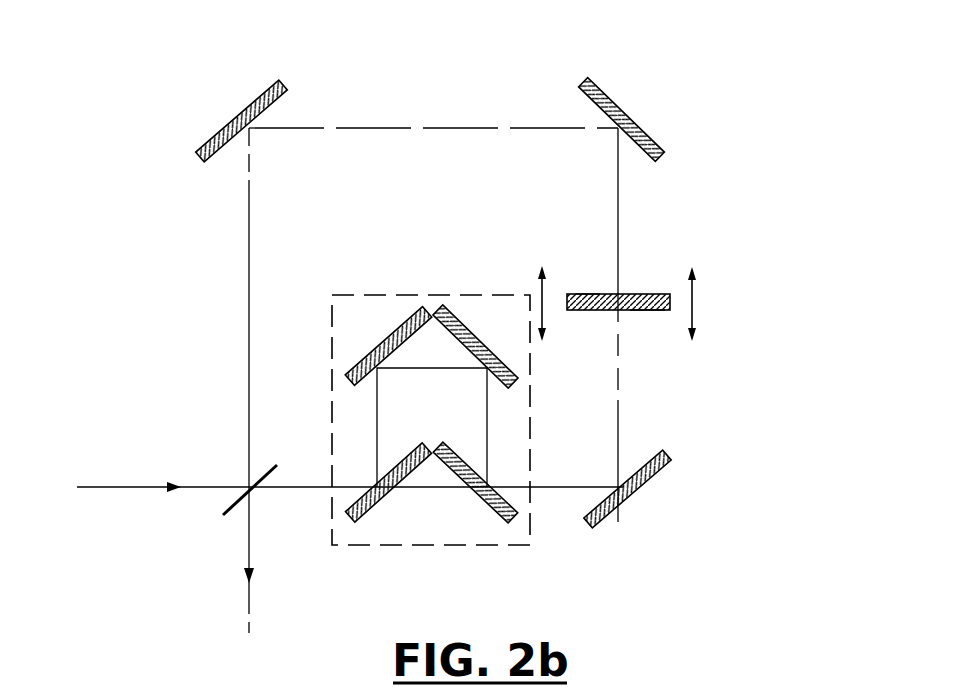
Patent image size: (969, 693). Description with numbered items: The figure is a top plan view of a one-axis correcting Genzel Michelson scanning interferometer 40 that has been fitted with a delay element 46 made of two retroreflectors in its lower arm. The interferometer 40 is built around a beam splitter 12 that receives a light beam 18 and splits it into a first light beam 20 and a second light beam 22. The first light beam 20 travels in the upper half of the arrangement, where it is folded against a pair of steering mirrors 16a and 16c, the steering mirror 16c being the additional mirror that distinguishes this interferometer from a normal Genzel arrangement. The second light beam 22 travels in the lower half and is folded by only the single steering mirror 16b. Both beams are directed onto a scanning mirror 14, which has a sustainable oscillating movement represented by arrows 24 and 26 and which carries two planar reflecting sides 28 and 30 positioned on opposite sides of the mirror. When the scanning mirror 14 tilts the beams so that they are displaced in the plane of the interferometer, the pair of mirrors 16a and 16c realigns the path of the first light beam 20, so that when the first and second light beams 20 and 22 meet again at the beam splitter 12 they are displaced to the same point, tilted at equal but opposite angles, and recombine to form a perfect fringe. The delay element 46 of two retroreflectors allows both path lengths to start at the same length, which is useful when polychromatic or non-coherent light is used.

The beam splitter 12 is at (224, 514).
The scanning mirror 14 is at (633, 293).
The steering mirror 16a is at (232, 122).
The steering mirror 16b is at (648, 487).
The additional steering mirror 16c is at (636, 116).
The light beam 18 is at (98, 496).
The first light beam 20 is at (248, 403).
The second light beam 22 is at (292, 492).
The arrow 24 is at (697, 304).
The arrow 26 is at (540, 290).
The reflecting side 28 is at (590, 293).
The reflecting side 30 is at (648, 312).
The interferometer 40 is at (473, 64).
The delay element 46 is at (441, 554).